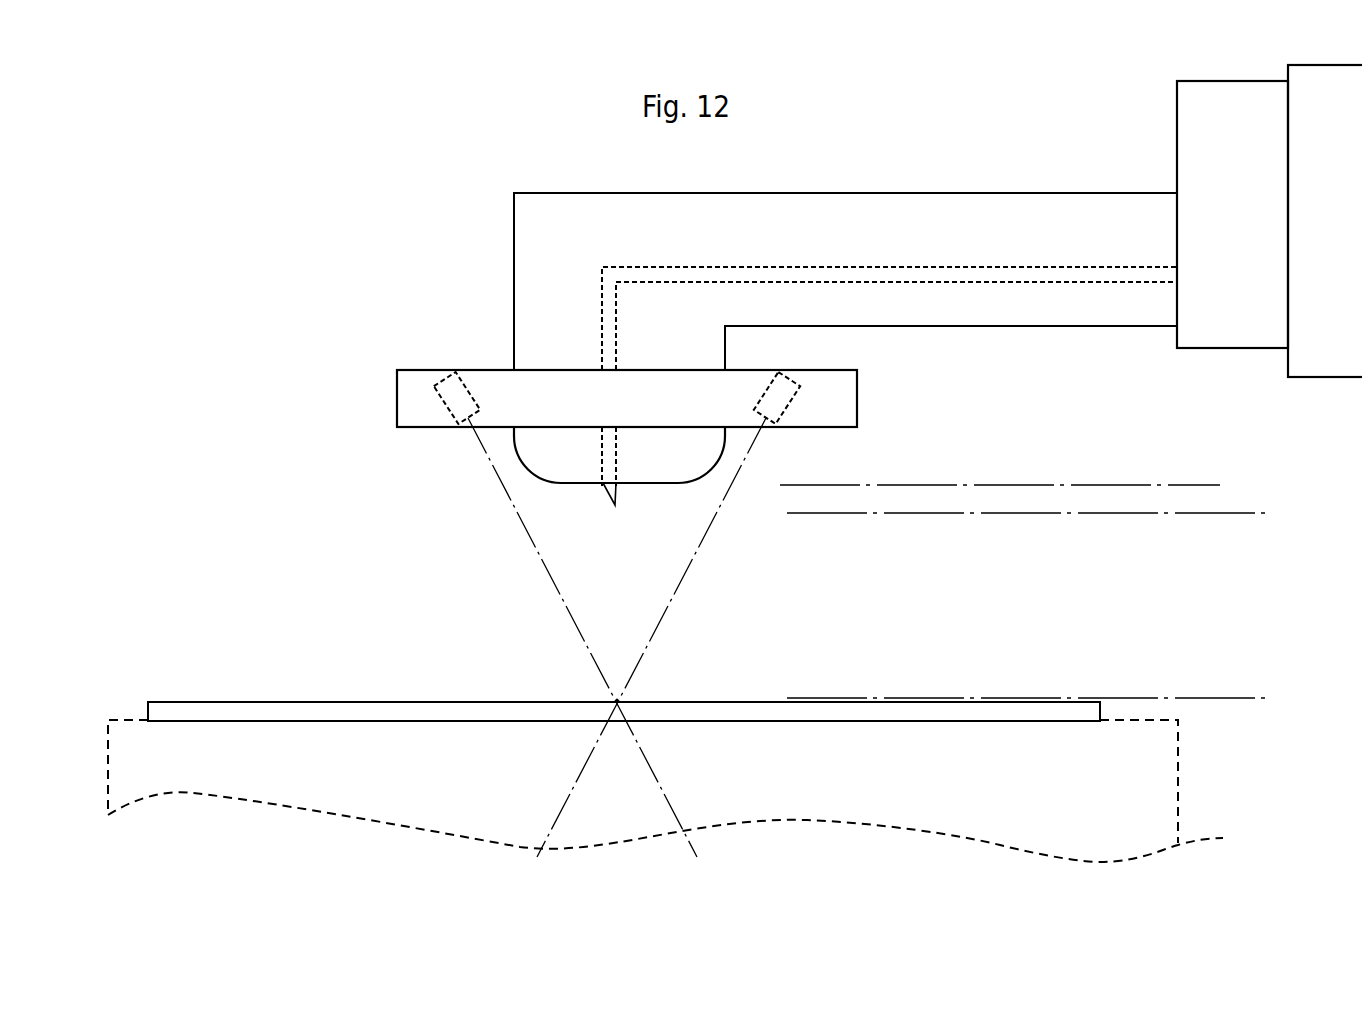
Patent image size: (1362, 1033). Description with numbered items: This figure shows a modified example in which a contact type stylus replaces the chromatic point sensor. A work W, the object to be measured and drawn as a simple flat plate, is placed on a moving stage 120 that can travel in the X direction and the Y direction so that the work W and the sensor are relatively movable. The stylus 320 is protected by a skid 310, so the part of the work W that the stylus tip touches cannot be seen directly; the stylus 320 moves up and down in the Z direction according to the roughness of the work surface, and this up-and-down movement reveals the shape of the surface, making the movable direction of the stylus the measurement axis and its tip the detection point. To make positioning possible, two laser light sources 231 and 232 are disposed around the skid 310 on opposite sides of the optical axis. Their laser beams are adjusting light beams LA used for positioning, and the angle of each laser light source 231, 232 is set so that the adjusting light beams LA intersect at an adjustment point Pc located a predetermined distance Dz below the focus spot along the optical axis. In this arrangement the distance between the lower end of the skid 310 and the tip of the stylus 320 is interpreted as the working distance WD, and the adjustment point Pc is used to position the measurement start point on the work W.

The laser light source 231 is at (443, 370).
The laser light source 232 is at (790, 428).
The skid 310 is at (527, 451).
The stylus 320 is at (616, 498).
The moving stage 120 is at (1160, 817).
The work W is at (222, 710).
The adjusting light beam LA is at (567, 600).
The adjustment point Pc is at (617, 700).
The working distance WD is at (1210, 558).
The predetermined distance Dz is at (1248, 514).